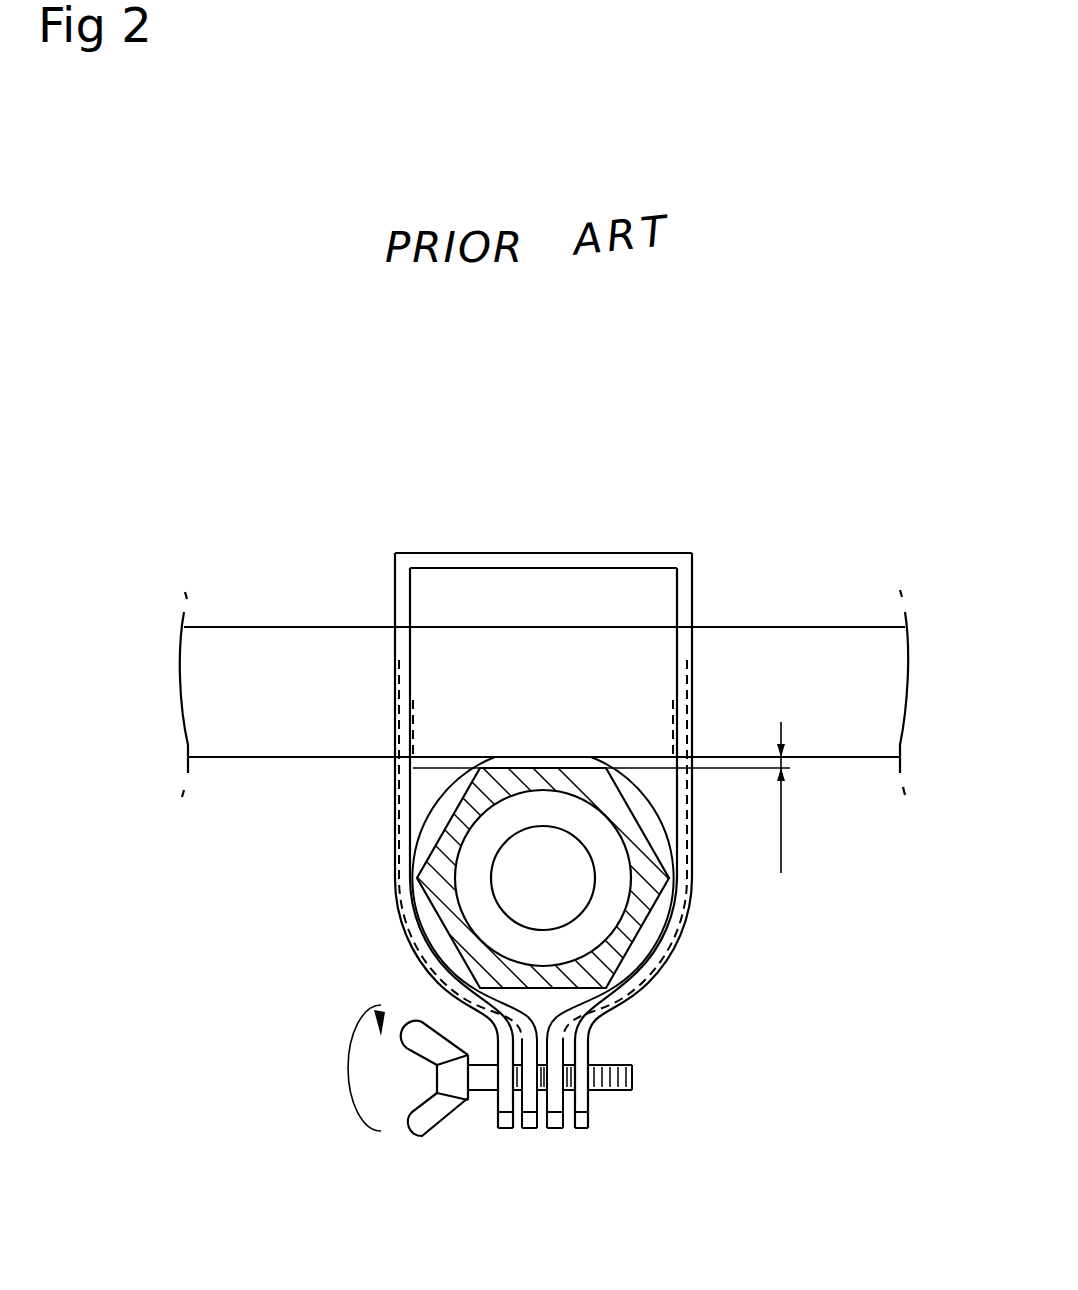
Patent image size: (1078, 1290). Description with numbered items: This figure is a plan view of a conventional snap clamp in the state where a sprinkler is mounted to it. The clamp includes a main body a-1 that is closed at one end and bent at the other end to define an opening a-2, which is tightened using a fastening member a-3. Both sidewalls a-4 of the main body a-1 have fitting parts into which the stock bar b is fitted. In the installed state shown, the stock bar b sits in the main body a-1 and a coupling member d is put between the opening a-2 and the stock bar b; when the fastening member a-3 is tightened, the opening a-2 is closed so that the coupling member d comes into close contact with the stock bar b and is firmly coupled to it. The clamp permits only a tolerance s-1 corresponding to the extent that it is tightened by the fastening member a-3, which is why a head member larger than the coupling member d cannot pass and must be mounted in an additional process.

The main body a-1 is at (368, 550).
The opening a-2 is at (570, 1105).
The fastening member a-3 is at (450, 1080).
The sidewalls a-4 is at (687, 692).
The stock bar b is at (270, 760).
The coupling member d is at (657, 900).
The tolerance s-1 is at (601, 797).